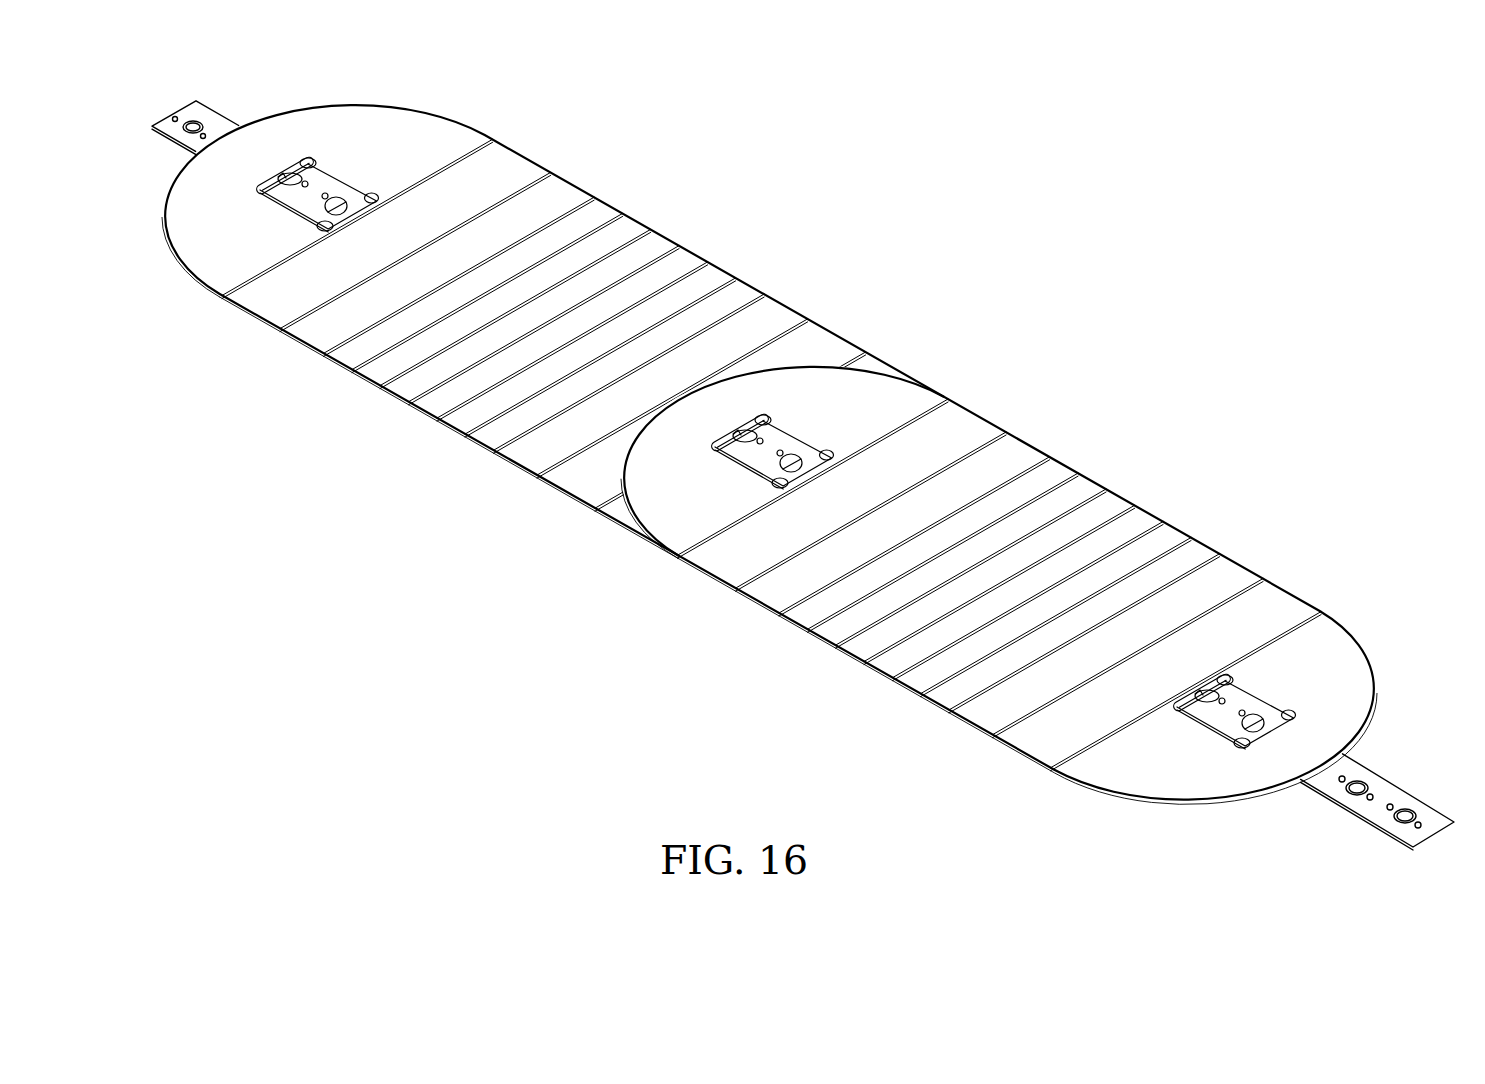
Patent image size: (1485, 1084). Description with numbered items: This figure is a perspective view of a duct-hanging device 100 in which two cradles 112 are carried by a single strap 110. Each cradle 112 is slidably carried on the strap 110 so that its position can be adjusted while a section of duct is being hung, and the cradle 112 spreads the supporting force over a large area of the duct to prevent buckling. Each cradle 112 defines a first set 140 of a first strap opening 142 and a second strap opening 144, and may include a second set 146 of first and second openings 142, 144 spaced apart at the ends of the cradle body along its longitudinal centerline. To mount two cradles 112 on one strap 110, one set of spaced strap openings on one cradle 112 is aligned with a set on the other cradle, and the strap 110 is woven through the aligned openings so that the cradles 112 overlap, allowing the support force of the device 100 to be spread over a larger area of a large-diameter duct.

The device 100 is at (678, 592).
The strap 110 is at (1372, 816).
The cradle 112 is at (634, 225).
The first set of spaced strap openings 140 is at (345, 177).
The first strap opening 142 is at (308, 158).
The second strap opening 144 is at (376, 192).
The second set of openings 146 is at (1262, 683).